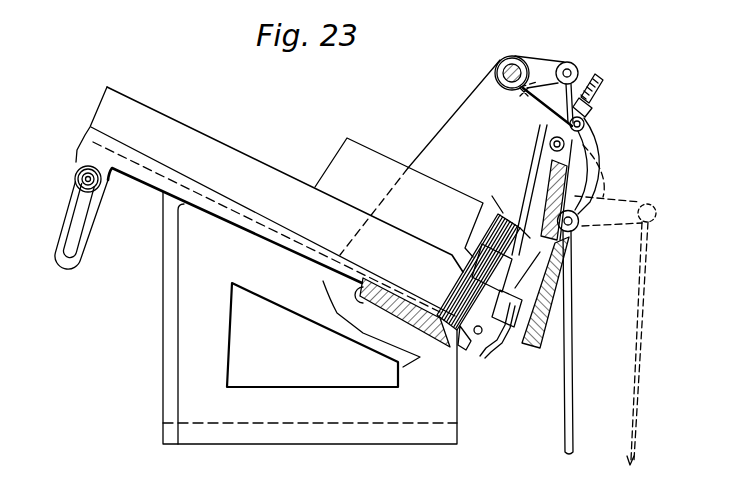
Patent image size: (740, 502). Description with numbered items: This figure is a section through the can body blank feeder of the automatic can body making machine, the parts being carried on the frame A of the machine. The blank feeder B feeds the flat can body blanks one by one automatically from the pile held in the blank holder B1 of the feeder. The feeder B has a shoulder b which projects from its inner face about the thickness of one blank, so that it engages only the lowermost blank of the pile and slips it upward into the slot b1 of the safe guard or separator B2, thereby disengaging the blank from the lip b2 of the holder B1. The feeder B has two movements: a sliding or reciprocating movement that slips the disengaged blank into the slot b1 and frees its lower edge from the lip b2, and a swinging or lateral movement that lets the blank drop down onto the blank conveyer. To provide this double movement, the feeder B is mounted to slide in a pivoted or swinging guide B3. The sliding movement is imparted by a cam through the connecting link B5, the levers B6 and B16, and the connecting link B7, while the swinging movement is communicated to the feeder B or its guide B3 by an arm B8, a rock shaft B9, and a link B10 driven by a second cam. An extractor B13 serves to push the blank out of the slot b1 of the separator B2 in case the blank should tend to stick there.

The frame A is at (282, 306).
The blank feeder B is at (540, 340).
The blank holder B1 is at (386, 288).
The separator B2 is at (523, 187).
The swinging guide B3 is at (557, 281).
The connecting link B5 is at (563, 409).
The lever B6 is at (549, 64).
The connecting link B7 is at (590, 148).
The arm B8 is at (656, 205).
The rock shaft B9 is at (604, 190).
The link B10 is at (630, 443).
The extractor B13 is at (551, 144).
The lever B16 is at (521, 96).
The shoulder b is at (485, 352).
The slot b1 is at (576, 234).
The lip b2 is at (459, 345).